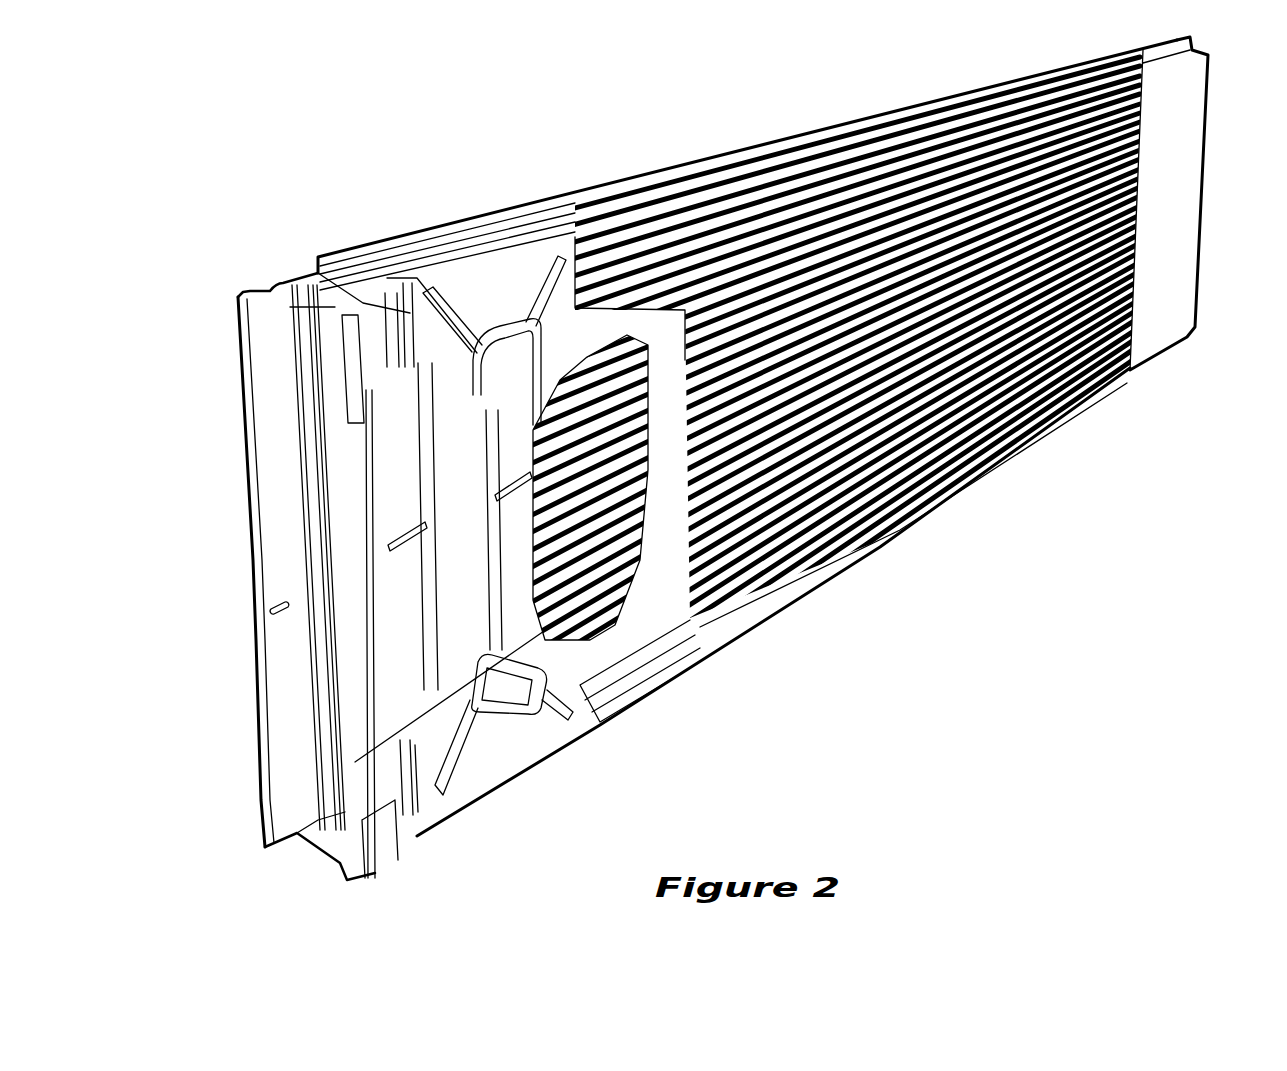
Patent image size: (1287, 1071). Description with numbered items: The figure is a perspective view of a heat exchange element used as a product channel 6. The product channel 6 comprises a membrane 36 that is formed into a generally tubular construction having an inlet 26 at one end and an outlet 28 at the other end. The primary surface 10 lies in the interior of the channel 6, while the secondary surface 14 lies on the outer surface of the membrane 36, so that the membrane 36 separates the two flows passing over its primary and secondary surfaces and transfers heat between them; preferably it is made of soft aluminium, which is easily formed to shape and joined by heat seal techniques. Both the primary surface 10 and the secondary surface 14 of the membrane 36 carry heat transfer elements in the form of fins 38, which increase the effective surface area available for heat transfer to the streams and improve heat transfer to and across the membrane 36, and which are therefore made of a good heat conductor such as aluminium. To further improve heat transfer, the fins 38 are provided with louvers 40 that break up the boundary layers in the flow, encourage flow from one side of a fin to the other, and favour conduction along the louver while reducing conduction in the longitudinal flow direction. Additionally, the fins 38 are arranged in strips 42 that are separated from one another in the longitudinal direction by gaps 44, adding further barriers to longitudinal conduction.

The product channel 6 is at (950, 680).
The primary surface 10 is at (533, 620).
The secondary surface 14 is at (655, 550).
The inlet 26 is at (245, 520).
The outlet 28 is at (1168, 198).
The membrane 36 is at (388, 832).
The fins 38 is at (762, 607).
The louvers 40 is at (712, 602).
The strips 42 is at (906, 532).
The gaps 44 is at (806, 605).